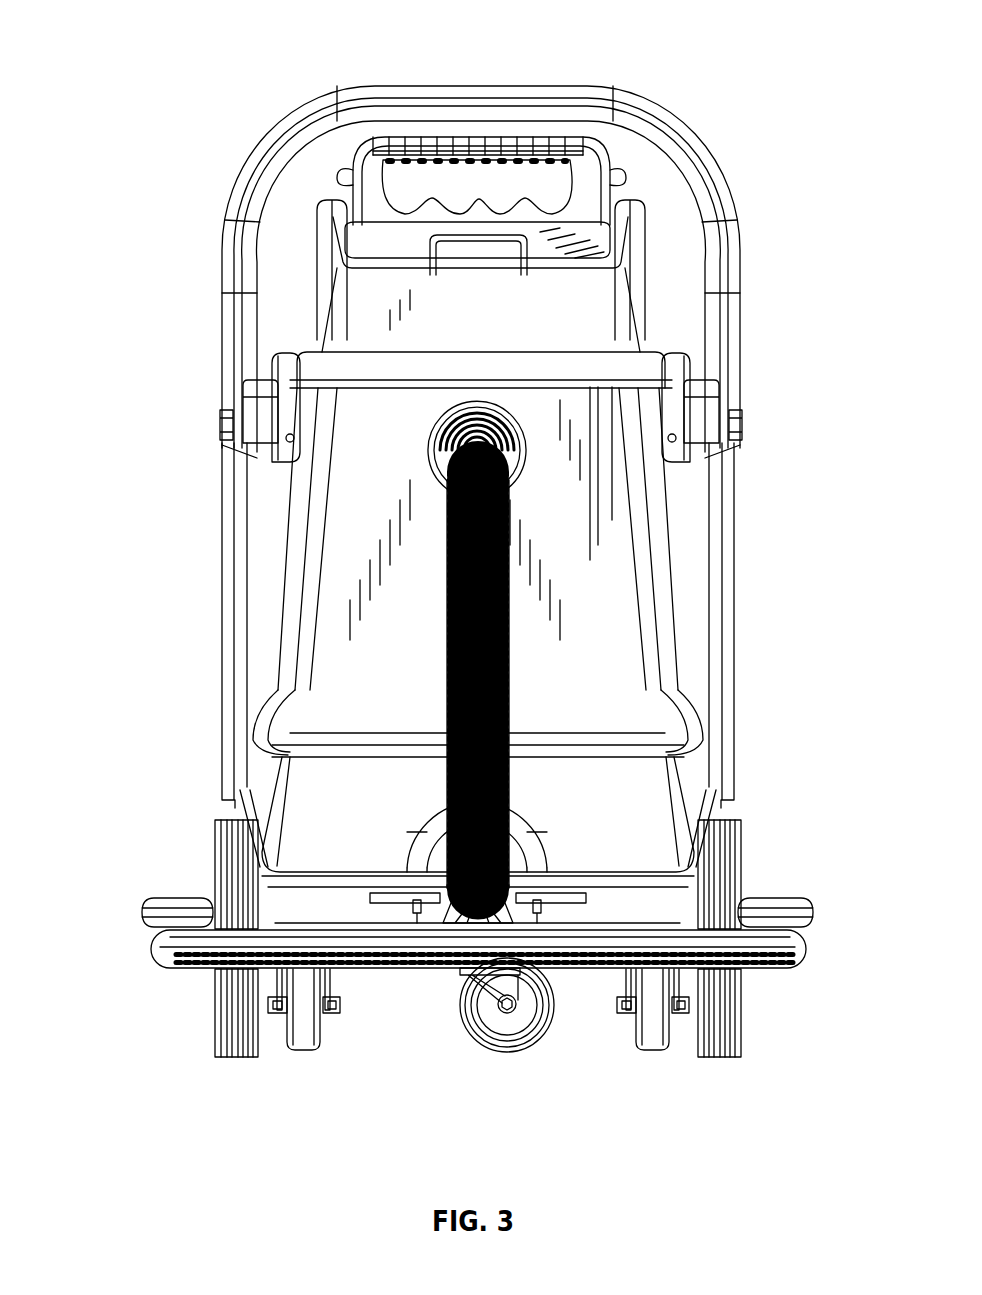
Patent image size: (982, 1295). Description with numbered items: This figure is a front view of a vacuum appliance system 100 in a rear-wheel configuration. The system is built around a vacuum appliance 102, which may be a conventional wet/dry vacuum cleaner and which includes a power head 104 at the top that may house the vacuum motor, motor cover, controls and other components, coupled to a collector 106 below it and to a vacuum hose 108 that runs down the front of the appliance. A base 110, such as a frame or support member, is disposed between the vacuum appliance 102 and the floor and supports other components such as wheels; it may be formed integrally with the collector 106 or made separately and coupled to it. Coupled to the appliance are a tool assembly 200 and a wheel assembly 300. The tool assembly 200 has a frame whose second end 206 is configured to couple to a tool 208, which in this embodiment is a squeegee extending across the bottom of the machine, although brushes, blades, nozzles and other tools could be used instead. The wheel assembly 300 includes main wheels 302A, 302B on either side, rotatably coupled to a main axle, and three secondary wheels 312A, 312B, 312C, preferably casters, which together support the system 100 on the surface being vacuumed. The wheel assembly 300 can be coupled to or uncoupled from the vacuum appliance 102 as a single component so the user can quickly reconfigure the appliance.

The vacuum appliance system 100 is at (136, 44).
The vacuum appliance 102 is at (232, 556).
The power head 104 is at (363, 330).
The collector 106 is at (318, 420).
The vacuum hose 108 is at (505, 620).
The base 110 is at (665, 822).
The tool assembly 200 is at (148, 977).
The second end 206 is at (368, 910).
The tool 208 is at (750, 933).
The wheel assembly 300 is at (148, 873).
The main wheel 302A is at (240, 855).
The main wheel 302B is at (722, 875).
The secondary wheel 312A is at (503, 1058).
The secondary wheel 312B is at (305, 1042).
The secondary wheel 312C is at (650, 1042).